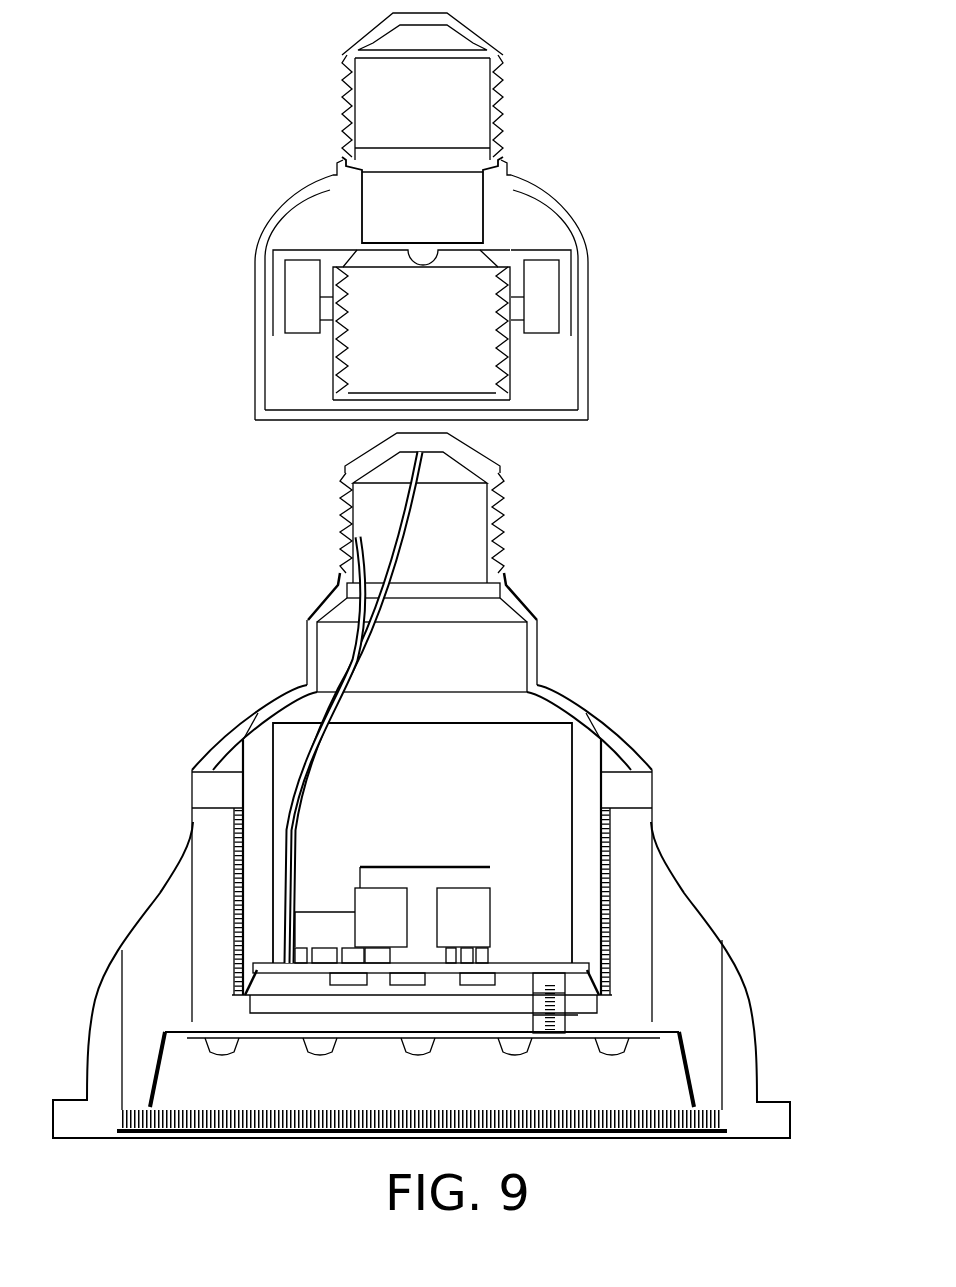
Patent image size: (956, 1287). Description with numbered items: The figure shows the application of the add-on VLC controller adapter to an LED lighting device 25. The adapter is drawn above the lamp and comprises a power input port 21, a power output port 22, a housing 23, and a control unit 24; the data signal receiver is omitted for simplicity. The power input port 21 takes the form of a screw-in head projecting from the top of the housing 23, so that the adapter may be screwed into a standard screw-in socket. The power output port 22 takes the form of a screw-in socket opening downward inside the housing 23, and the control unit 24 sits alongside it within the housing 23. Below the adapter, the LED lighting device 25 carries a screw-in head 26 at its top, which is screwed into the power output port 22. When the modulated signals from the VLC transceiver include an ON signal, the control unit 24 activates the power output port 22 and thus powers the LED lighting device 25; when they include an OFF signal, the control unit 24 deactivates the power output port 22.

The power input port 21 is at (500, 97).
The power output port 22 is at (343, 343).
The housing 23 is at (565, 205).
The control unit 24 is at (545, 305).
The LED lighting device 25 is at (690, 847).
The screw-in head 26 is at (505, 512).